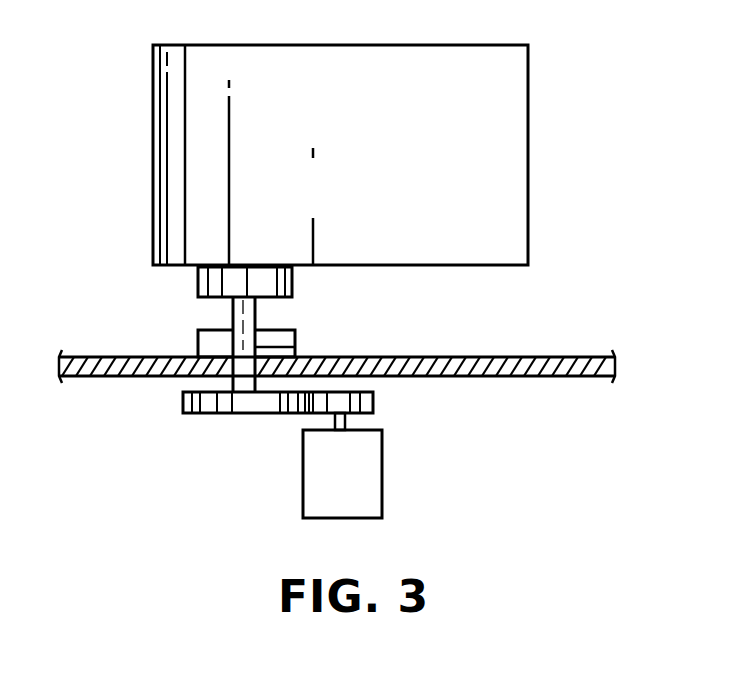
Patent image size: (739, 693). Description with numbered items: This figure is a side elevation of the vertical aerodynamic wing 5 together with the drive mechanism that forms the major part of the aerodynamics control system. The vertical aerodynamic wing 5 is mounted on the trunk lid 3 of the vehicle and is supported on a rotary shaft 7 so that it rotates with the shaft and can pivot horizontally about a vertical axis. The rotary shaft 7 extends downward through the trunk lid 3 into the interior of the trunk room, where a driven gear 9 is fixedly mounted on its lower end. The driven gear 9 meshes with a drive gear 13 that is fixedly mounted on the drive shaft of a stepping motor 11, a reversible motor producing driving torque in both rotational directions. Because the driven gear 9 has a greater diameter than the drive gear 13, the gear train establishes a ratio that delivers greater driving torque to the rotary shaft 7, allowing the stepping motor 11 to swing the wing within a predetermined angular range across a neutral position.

The trunk lid 3 is at (550, 357).
The vertical aerodynamic wing 5 is at (516, 151).
The rotary shaft 7 is at (296, 348).
The driven gear 9 is at (248, 402).
The stepping motor 11 is at (362, 499).
The drive gear 13 is at (374, 400).